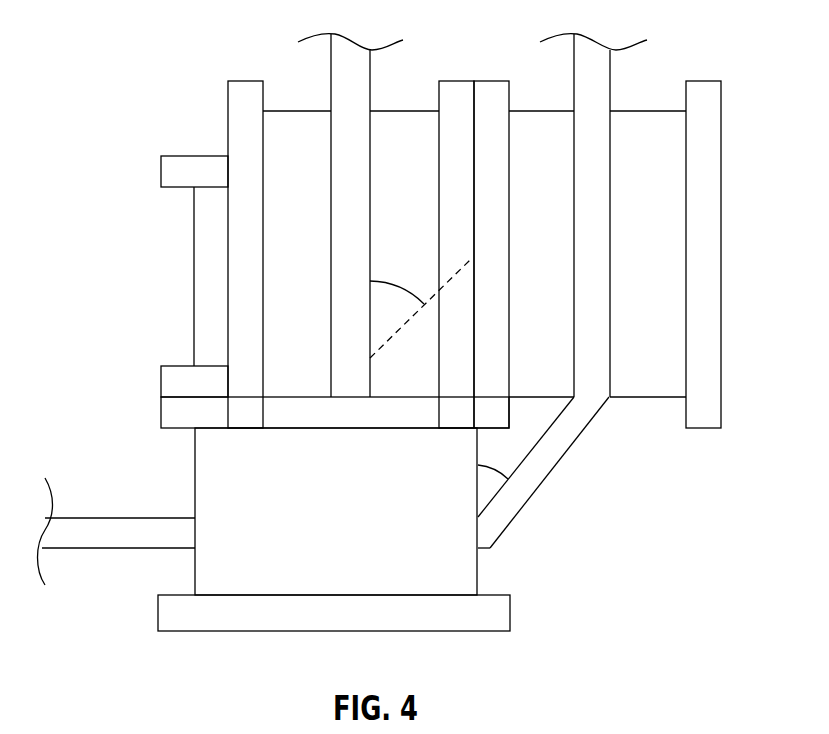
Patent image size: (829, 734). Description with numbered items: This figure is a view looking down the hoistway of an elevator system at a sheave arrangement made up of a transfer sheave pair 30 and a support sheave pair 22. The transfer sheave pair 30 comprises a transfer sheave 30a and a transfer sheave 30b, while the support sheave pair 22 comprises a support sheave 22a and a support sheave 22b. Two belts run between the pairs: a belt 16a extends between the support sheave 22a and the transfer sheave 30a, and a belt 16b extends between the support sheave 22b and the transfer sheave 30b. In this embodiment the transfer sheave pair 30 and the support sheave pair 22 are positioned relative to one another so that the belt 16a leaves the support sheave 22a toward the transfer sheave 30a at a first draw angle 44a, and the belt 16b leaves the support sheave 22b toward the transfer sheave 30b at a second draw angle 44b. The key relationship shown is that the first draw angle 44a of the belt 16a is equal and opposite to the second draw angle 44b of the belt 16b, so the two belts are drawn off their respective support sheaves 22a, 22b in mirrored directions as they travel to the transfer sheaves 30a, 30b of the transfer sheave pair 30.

The transfer sheave pair 30 is at (228, 97).
The transfer sheave 30a is at (653, 183).
The transfer sheave 30b is at (314, 125).
The belt 16a is at (597, 82).
The belt 16b is at (355, 82).
The support sheave pair 22 is at (202, 633).
The support sheave 22a is at (202, 478).
The support sheave 22b is at (202, 247).
The first draw angle 44a is at (488, 474).
The second draw angle 44b is at (405, 293).